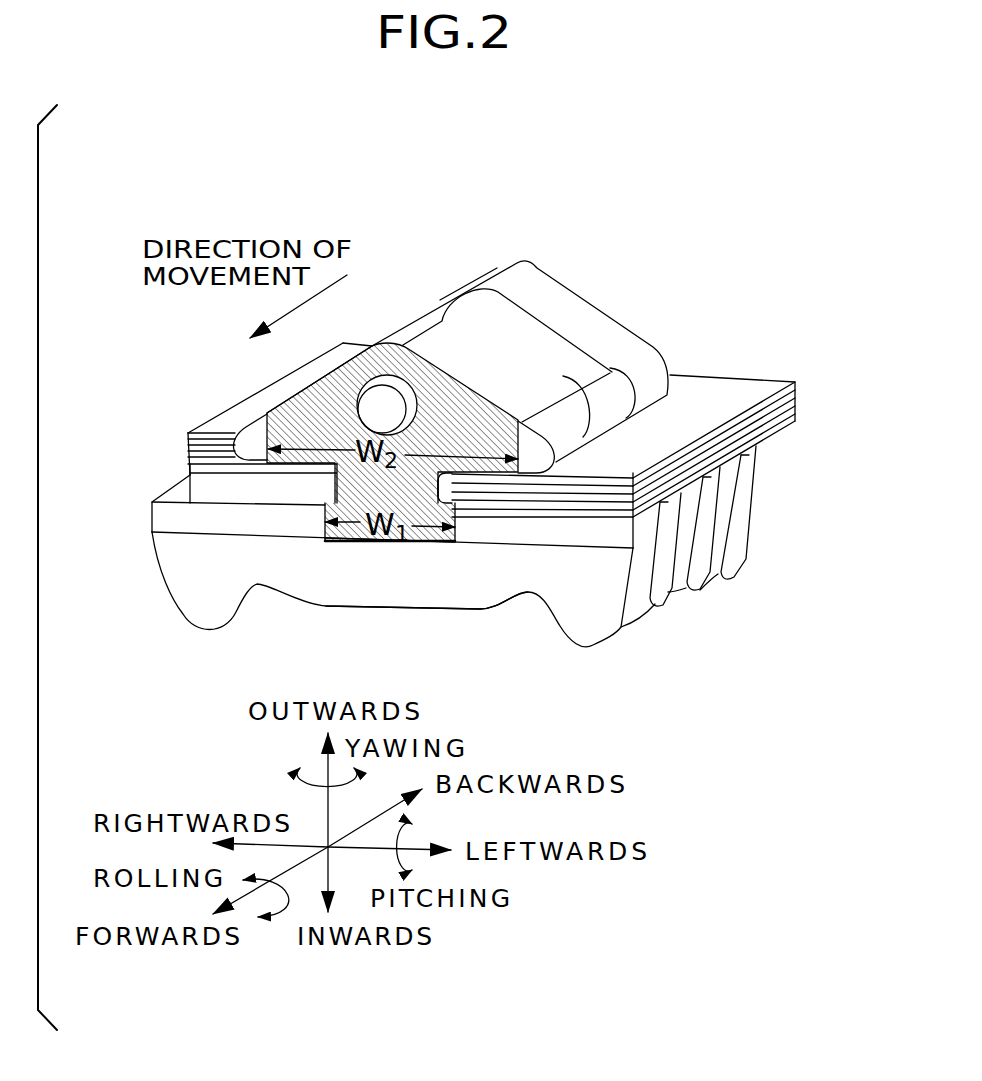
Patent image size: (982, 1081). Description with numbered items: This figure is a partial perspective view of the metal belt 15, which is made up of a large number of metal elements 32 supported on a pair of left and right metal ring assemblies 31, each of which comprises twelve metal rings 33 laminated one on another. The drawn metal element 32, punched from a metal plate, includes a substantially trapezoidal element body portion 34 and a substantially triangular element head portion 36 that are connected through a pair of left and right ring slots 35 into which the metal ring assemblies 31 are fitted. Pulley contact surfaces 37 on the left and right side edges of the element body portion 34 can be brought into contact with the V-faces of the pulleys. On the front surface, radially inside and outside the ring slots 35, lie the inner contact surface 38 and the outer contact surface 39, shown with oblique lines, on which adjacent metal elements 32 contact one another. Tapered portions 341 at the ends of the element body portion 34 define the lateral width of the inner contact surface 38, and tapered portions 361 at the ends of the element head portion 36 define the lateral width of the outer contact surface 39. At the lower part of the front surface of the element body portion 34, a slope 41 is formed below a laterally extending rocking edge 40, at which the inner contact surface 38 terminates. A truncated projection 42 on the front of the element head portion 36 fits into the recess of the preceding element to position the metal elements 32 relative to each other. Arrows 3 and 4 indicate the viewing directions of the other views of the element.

The metal belt 15 is at (440, 243).
The metal ring assembly 31 is at (207, 415).
The metal element 32 is at (493, 633).
The metal ring 33 is at (188, 460).
The element body portion 34 is at (200, 597).
The tapered portion 341 is at (240, 520).
The ring slot 35 is at (240, 480).
The element head portion 36 is at (397, 321).
The tapered portion 361 is at (252, 430).
The pulley contact surface 37 is at (630, 590).
The inner contact surface 38 is at (425, 537).
The outer contact surface 39 is at (337, 382).
The rocking edge 40 is at (372, 542).
The slope 41 is at (398, 602).
The projection 42 is at (395, 402).
The viewing direction of FIG. 3 is at (870, 475).
The viewing direction of FIG. 4 is at (228, 657).